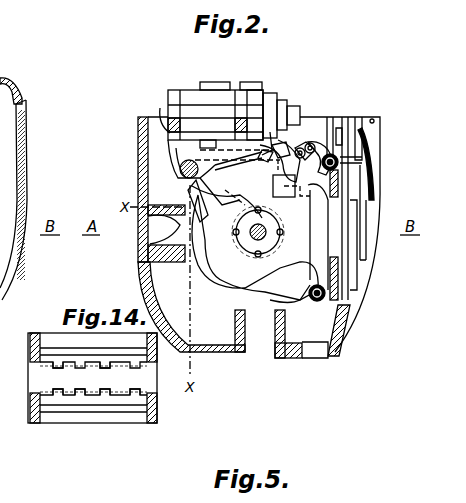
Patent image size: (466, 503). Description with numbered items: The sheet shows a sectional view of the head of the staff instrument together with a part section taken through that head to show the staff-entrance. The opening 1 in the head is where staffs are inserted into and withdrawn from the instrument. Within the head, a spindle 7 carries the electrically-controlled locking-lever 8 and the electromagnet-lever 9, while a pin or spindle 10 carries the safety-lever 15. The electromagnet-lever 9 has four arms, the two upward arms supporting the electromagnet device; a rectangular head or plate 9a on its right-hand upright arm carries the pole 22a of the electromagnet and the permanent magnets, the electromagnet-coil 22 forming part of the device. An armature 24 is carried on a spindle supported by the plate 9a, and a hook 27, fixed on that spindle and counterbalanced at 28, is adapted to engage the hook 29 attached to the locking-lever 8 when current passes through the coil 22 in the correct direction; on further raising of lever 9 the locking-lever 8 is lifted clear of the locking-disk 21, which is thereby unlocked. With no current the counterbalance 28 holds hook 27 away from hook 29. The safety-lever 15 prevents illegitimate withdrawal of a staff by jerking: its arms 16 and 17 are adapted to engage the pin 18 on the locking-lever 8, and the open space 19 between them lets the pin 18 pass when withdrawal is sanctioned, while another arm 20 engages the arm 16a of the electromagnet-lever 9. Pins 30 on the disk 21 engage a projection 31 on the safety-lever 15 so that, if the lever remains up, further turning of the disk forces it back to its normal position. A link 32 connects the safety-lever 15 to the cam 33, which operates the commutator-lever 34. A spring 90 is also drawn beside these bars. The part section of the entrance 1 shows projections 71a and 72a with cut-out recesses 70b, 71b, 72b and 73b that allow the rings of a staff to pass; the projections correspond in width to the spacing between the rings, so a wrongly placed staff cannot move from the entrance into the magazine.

In FIG. 2, the opening 1 is at (178, 222).
In FIG. 14, the opening 1 is at (28, 379).
In FIG. 2, the spindle 7 is at (179, 169).
In FIG. 2, the locking-lever 8 is at (263, 188).
In FIG. 2, the electromagnet-lever 9 is at (176, 152).
In FIG. 2, the head or plate 9a is at (240, 98).
In FIG. 2, the pin or spindle 10 is at (304, 291).
In FIG. 2, the safety-lever 15 is at (266, 232).
In FIG. 2, the arm 16 is at (295, 122).
In FIG. 2, the arm 16a is at (236, 200).
In FIG. 2, the arm 17 is at (284, 122).
In FIG. 2, the pin or projection 18 is at (293, 153).
In FIG. 2, the open space 19 is at (291, 178).
In FIG. 2, the arm 20 is at (227, 210).
In FIG. 2, the locking-disk 21 is at (205, 270).
In FIG. 2, the electromagnet-coil 22 is at (183, 90).
In FIG. 2, the pole of the electromagnet 22a is at (258, 82).
In FIG. 2, the armature 24 is at (272, 95).
In FIG. 2, the hook 27 is at (282, 142).
In FIG. 2, the counterbalance 28 is at (280, 108).
In FIG. 2, the hook 29 is at (172, 108).
In FIG. 2, the pins 30 is at (249, 234).
In FIG. 2, the projection 31 is at (253, 254).
In FIG. 2, the link 32 is at (310, 142).
In FIG. 2, the cam 33 is at (333, 125).
In FIG. 2, the commutator-lever 34 is at (350, 122).
In FIG. 2, the spring 90 is at (374, 183).
In FIG. 14, the recess 70b is at (56, 392).
In FIG. 2, the projection 71a is at (147, 240).
In FIG. 14, the projection 71a is at (58, 366).
In FIG. 14, the recess 71b is at (78, 392).
In FIG. 14, the projection 72a is at (106, 366).
In FIG. 14, the recess 72b is at (104, 392).
In FIG. 14, the recess 73b is at (134, 392).